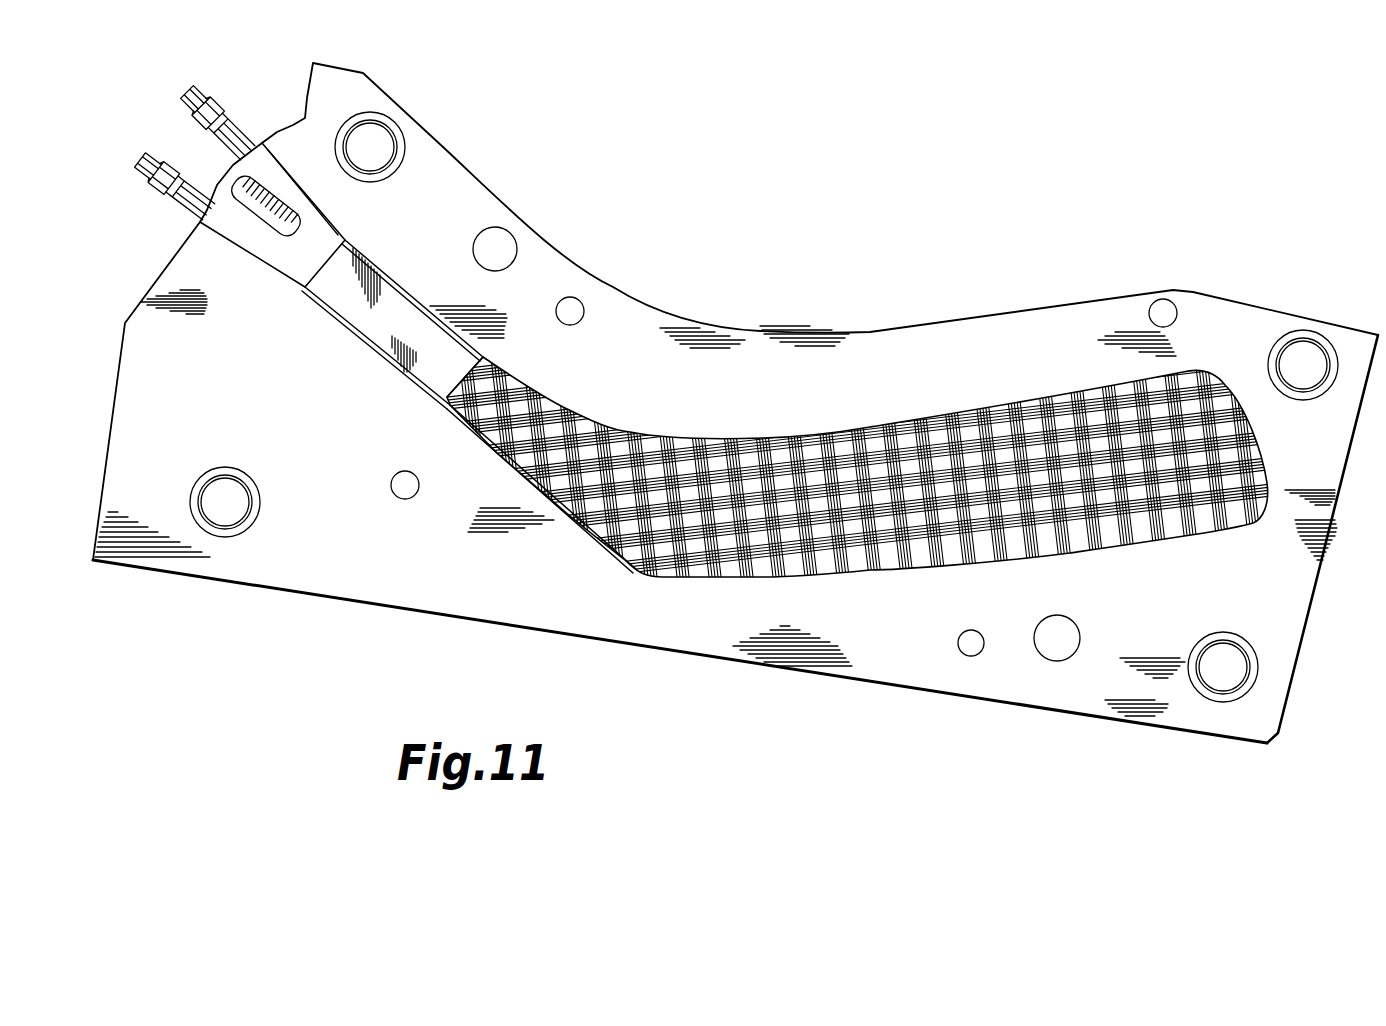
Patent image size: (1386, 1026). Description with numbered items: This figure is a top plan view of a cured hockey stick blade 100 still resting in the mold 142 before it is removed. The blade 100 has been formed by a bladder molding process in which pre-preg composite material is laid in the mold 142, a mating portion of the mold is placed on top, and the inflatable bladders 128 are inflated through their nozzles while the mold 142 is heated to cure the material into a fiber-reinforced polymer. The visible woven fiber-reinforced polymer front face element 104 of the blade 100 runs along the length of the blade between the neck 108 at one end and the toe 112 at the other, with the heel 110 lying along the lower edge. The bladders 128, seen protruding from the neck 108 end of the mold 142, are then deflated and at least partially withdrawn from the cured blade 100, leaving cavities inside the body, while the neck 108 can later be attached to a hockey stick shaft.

The ice hockey stick blade 100 is at (890, 407).
The front face element 104 is at (1007, 543).
The neck 108 is at (403, 270).
The heel 110 is at (672, 607).
The toe 112 is at (1277, 440).
The inflatable bladder 128 is at (222, 93).
The mold 142 is at (667, 295).